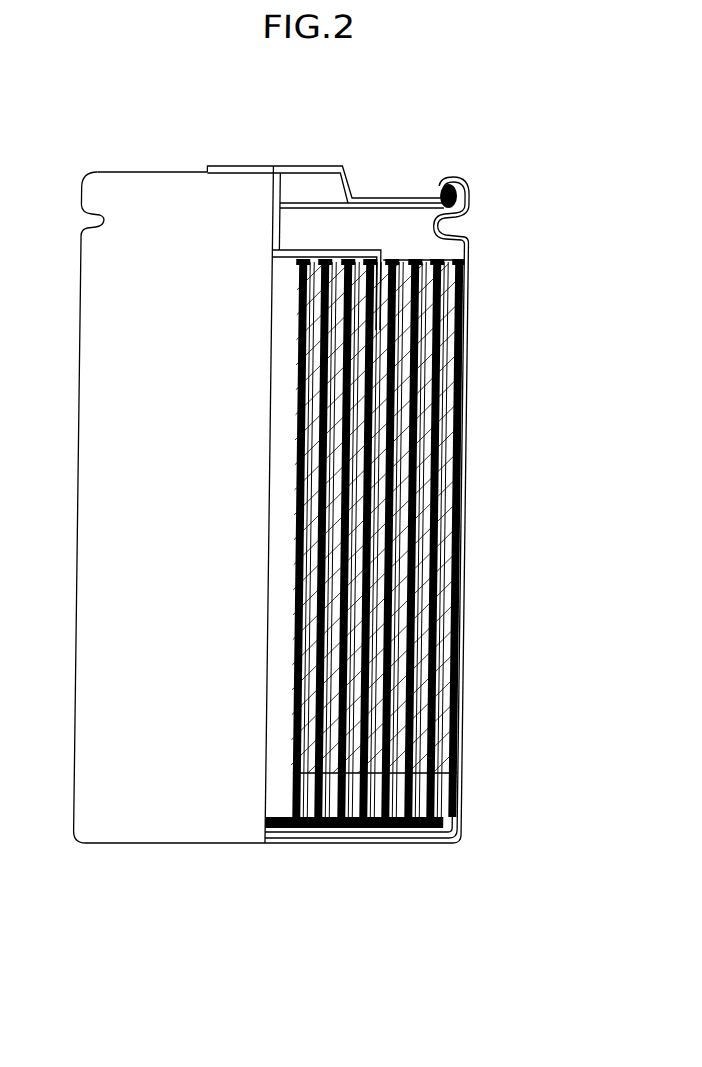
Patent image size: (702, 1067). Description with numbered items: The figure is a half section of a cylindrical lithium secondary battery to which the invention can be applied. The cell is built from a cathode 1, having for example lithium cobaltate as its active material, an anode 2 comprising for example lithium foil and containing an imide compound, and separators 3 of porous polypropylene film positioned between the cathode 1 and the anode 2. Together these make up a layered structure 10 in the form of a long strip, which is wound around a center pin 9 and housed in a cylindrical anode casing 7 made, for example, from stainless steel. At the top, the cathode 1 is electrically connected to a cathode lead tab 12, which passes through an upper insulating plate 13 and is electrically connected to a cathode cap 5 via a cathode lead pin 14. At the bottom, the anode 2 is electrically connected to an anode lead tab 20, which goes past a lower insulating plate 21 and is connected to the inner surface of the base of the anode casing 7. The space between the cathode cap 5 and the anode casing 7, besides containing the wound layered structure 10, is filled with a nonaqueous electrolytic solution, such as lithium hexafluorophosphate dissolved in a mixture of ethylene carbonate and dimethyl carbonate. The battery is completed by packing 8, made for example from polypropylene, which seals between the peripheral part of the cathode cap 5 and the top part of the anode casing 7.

The cathode 1 is at (380, 508).
The anode 2 is at (438, 360).
The separators 3 is at (437, 287).
The cathode cap 5 is at (311, 167).
The anode casing 7 is at (354, 847).
The packing 8 is at (434, 185).
The center pin 9 is at (286, 599).
The layered structure 10 is at (460, 708).
The cathode lead tab 12 is at (334, 250).
The upper insulating plate 13 is at (462, 242).
The cathode lead pin 14 is at (276, 230).
The anode lead tab 20 is at (458, 793).
The lower insulating plate 21 is at (282, 836).